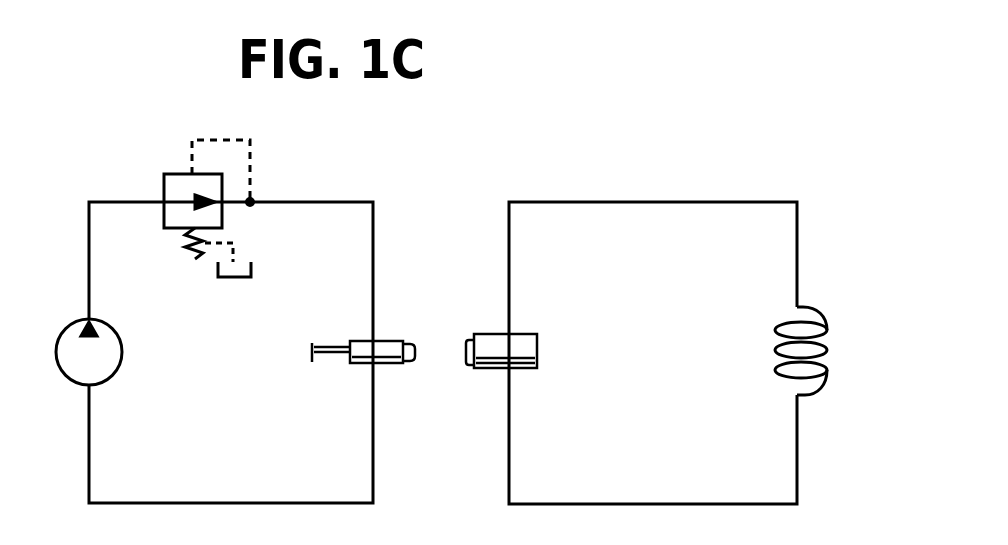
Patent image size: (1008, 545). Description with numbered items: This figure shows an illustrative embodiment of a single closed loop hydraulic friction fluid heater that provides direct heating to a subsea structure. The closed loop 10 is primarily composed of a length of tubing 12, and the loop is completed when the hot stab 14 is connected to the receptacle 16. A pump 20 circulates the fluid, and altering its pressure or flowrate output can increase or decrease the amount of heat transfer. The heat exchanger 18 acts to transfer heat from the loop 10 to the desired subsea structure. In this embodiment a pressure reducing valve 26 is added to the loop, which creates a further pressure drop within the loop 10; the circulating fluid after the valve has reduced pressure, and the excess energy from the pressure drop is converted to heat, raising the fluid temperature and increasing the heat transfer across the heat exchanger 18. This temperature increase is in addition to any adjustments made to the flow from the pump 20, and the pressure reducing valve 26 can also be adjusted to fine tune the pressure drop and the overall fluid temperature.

The closed loop 10 is at (749, 176).
The tubing 12 is at (585, 202).
The hot stab 14 is at (415, 358).
The receptacle 16 is at (468, 340).
The heat exchanger 18 is at (805, 305).
The pump 20 is at (67, 352).
The pressure reducing valve 26 is at (164, 188).